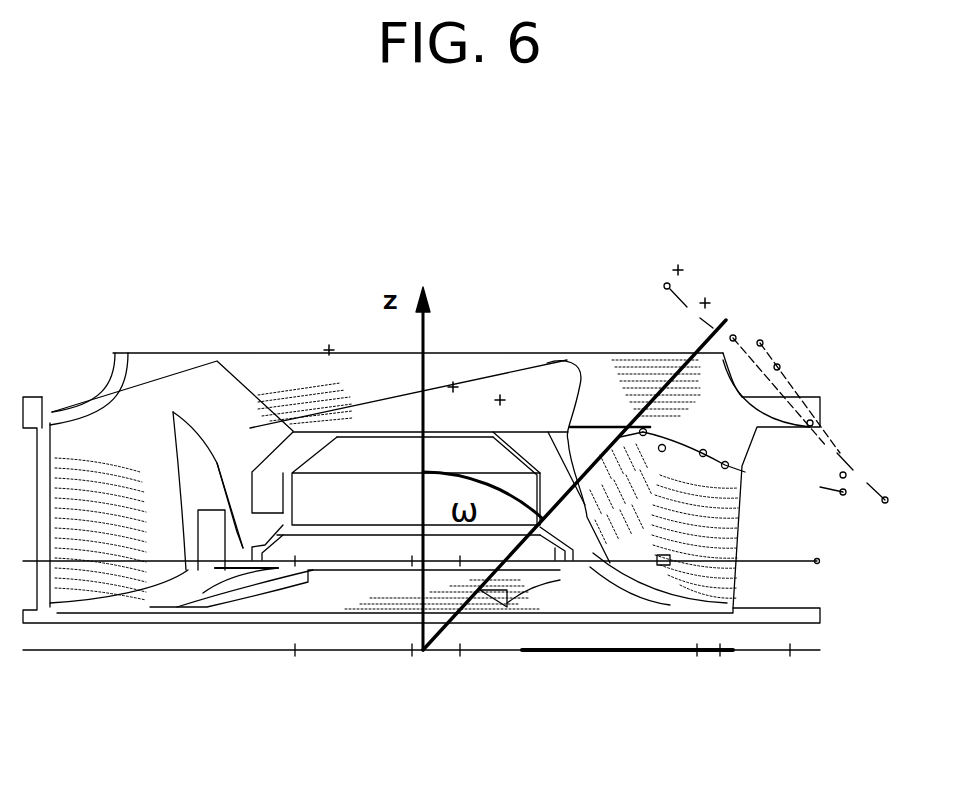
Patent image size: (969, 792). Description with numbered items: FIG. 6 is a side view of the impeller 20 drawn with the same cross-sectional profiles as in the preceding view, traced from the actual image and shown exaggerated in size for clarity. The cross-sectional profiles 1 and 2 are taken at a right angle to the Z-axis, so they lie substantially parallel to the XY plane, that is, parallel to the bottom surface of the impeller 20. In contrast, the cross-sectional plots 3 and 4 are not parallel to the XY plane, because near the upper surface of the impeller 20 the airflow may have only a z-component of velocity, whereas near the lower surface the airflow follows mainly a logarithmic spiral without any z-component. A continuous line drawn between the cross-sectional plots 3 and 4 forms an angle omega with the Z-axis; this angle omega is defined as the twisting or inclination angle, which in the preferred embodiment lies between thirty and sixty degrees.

The cross-sectional profile 1 is at (442, 645).
The cross-sectional profile 2 is at (442, 579).
The cross-sectional plot 3 is at (745, 472).
The cross-sectional plot 4 is at (809, 396).
The impeller 20 is at (812, 340).